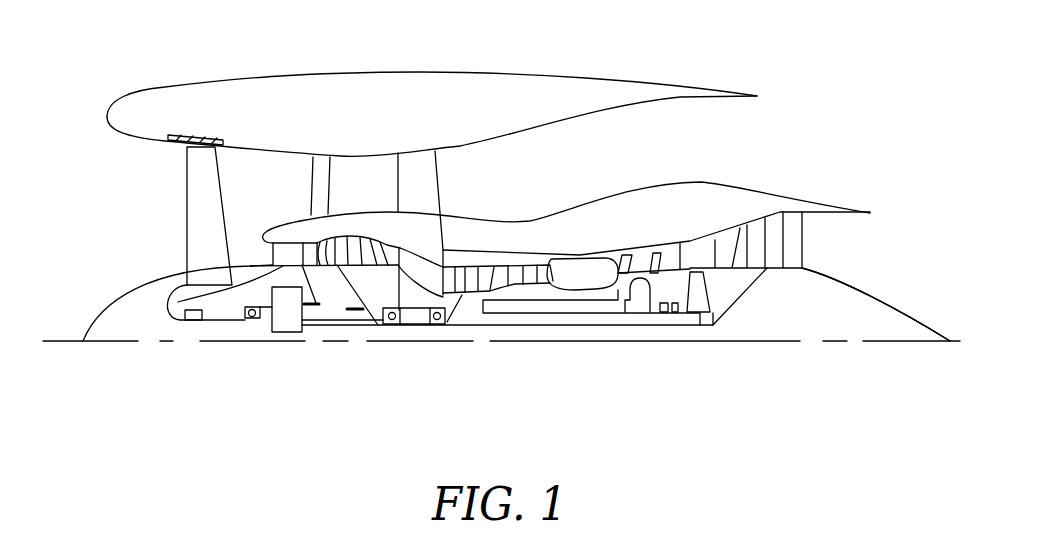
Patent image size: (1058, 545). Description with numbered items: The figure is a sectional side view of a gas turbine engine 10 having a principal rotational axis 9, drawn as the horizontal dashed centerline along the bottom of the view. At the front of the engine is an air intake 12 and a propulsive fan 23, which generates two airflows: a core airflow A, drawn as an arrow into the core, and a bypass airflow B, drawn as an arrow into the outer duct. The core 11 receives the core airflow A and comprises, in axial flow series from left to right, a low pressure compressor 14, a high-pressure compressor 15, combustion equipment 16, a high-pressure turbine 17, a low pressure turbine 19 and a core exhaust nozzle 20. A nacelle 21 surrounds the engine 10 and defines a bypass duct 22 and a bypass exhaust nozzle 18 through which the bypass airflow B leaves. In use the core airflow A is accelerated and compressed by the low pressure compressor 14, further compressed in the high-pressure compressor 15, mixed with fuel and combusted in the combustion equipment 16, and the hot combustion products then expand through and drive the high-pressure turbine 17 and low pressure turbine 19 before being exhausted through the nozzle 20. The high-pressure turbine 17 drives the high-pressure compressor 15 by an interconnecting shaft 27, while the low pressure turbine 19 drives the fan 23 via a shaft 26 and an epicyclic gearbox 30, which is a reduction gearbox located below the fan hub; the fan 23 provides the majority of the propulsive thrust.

The principal rotational axis 9 is at (808, 346).
The gas turbine engine 10 is at (184, 86).
The core 11 is at (548, 232).
The air intake 12 is at (126, 165).
The low pressure compressor 14 is at (355, 245).
The high-pressure compressor 15 is at (500, 275).
The combustion equipment 16 is at (573, 276).
The high-pressure turbine 17 is at (640, 258).
The bypass exhaust nozzle 18 is at (762, 135).
The low pressure turbine 19 is at (775, 235).
The core exhaust nozzle 20 is at (830, 245).
The nacelle 21 is at (413, 85).
The bypass duct 22 is at (701, 151).
The propulsive fan 23 is at (188, 220).
The shaft 26 is at (495, 327).
The interconnecting shaft 27 is at (538, 315).
The epicyclic gearbox 30 is at (285, 320).
The core airflow A is at (254, 252).
The bypass airflow B is at (252, 187).